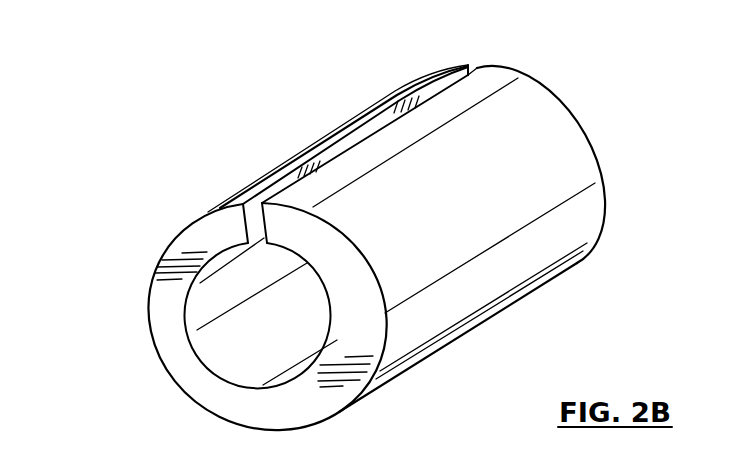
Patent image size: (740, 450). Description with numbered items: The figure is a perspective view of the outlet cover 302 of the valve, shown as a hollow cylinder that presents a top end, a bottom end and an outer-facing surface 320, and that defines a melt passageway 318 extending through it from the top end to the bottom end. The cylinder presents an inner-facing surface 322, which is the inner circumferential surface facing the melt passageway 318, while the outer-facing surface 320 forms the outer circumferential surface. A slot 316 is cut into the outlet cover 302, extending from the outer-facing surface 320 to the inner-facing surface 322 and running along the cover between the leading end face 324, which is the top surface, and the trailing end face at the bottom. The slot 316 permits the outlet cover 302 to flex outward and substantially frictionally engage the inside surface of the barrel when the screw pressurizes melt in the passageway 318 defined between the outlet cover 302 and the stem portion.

The outlet cover 302 is at (333, 218).
The slot 316 is at (472, 63).
The passageway 318 is at (223, 323).
The outer-facing surface 320 is at (490, 310).
The inner-facing surface 322 is at (334, 350).
The leading end face 324 is at (347, 271).